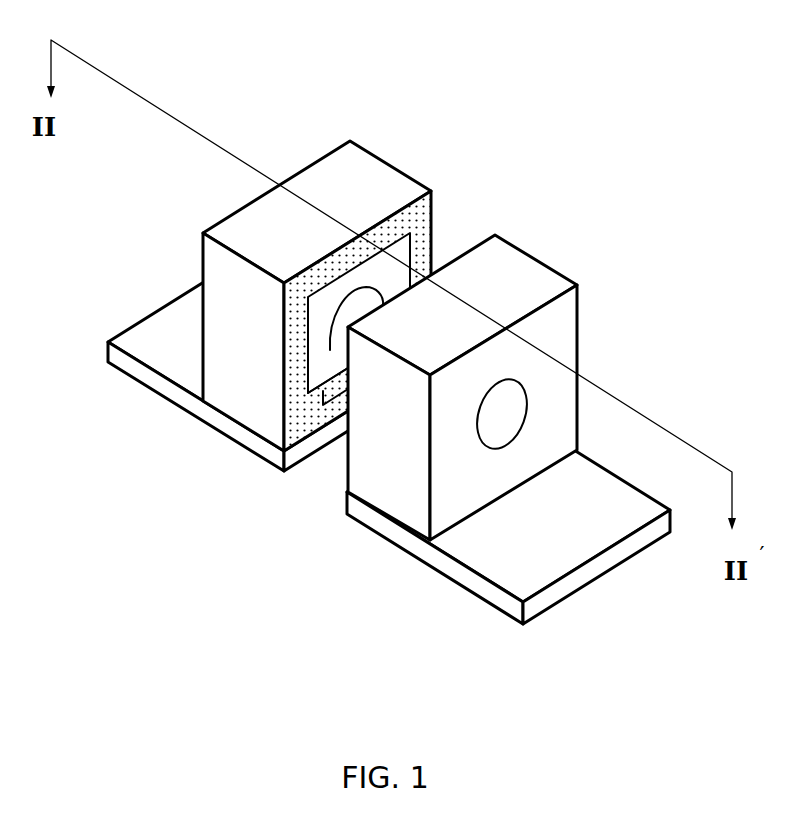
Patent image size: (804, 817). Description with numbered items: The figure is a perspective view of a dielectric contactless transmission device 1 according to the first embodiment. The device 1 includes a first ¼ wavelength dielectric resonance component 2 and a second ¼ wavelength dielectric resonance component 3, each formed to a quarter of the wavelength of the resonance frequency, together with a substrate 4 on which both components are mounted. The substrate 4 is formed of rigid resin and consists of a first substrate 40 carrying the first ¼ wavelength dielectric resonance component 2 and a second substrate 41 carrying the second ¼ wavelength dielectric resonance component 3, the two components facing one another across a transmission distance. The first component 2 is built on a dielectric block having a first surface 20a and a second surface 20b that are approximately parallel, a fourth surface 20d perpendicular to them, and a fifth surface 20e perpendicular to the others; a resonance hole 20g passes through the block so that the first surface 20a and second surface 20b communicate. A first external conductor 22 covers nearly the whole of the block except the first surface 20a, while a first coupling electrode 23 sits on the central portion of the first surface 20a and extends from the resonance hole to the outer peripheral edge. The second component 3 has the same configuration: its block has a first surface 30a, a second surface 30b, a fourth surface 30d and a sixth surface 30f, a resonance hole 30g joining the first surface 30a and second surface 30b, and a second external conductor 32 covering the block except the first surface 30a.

The dielectric contactless transmission device 1 is at (374, 359).
The first ¼ wavelength dielectric resonance component 2 is at (287, 257).
The second ¼ wavelength dielectric resonance component 3 is at (465, 424).
The substrate 4 is at (389, 463).
The first surface 20a is at (434, 212).
The second surface 20b is at (250, 203).
The fourth surface 20d is at (217, 228).
The fifth surface 20e is at (223, 343).
The resonance hole 20g is at (353, 292).
The first external conductor 22 is at (213, 276).
The first coupling electrode 23 is at (320, 362).
The first surface 30a is at (352, 458).
The second surface 30b is at (560, 348).
The fourth surface 30d is at (500, 280).
The sixth surface 30f is at (400, 478).
The resonance hole 30g is at (512, 412).
The second external conductor 32 is at (473, 498).
The first substrate 40 is at (247, 440).
The second substrate 41 is at (495, 516).